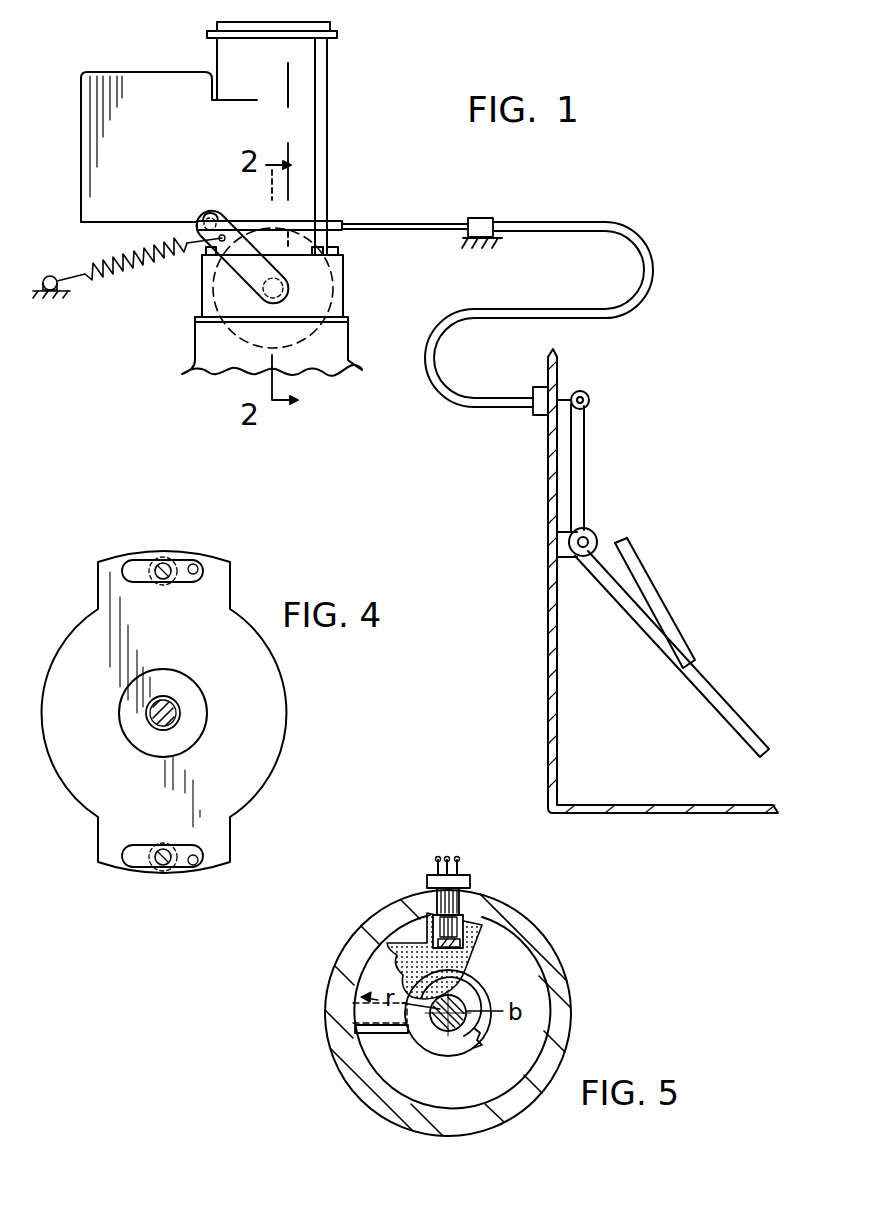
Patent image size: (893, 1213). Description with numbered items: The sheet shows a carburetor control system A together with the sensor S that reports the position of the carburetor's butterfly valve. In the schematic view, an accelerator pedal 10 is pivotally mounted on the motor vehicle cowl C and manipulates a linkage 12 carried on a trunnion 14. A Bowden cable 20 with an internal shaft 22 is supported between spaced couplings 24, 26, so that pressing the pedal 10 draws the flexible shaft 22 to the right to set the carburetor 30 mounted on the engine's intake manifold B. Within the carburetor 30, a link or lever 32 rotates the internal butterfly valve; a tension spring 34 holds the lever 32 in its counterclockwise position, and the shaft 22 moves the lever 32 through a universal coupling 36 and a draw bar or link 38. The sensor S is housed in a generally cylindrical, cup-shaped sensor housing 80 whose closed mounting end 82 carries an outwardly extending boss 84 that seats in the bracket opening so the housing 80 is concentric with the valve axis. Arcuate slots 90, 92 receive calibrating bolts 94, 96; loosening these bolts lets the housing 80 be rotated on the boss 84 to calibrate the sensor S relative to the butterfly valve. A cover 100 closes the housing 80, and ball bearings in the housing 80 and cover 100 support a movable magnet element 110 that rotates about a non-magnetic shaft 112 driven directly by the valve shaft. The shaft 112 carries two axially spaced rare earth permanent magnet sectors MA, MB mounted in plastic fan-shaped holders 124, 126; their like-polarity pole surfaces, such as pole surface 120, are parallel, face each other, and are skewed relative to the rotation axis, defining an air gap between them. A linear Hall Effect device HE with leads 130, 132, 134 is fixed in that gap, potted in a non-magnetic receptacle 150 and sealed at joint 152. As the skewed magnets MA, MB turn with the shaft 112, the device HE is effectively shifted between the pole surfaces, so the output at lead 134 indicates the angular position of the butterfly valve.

In FIG. 1, the accelerator pedal 10 is at (655, 583).
In FIG. 1, the linkage 12 is at (577, 473).
In FIG. 1, the trunnion 14 is at (590, 535).
In FIG. 1, the Bowden cable 20 is at (637, 240).
In FIG. 1, the internal shaft 22 is at (446, 223).
In FIG. 1, the coupling 24 is at (483, 218).
In FIG. 1, the coupling 26 is at (542, 392).
In FIG. 1, the carburetor 30 is at (323, 180).
In FIG. 1, the link or lever 32 is at (240, 278).
In FIG. 1, the tension spring 34 is at (126, 284).
In FIG. 1, the universal coupling 36 is at (213, 214).
In FIG. 1, the draw bar or link 38 is at (338, 221).
In FIG. 4, the sensor housing 80 is at (262, 762).
In FIG. 5, the sensor housing 80 is at (566, 967).
In FIG. 4, the closed mounting end 82 is at (238, 798).
In FIG. 4, the boss 84 is at (206, 718).
In FIG. 4, the arcuate slot 90 is at (200, 572).
In FIG. 4, the arcuate slot 92 is at (194, 866).
In FIG. 4, the calibrating bolt 94 is at (166, 567).
In FIG. 4, the calibrating bolt 96 is at (163, 850).
In FIG. 5, the cover 100 is at (520, 972).
In FIG. 5, the movable magnet element 110 is at (487, 1046).
In FIG. 4, the shaft 112 is at (166, 698).
In FIG. 5, the shaft 112 is at (466, 1000).
In FIG. 5, the magnetic pole surface 120 is at (365, 935).
In FIG. 5, the fan-shaped holder 124 is at (478, 1030).
In FIG. 5, the fan-shaped holder 126 is at (372, 1030).
In FIG. 5, the lead 130 is at (438, 856).
In FIG. 5, the lead 132 is at (447, 856).
In FIG. 5, the lead 134 is at (458, 857).
In FIG. 5, the non-magnetic receptacle 150 is at (456, 945).
In FIG. 5, the joint 152 is at (430, 886).
In FIG. 1, the system A is at (375, 403).
In FIG. 1, the intake manifold B is at (348, 336).
In FIG. 1, the motor vehicle cowl C is at (557, 702).
In FIG. 1, the sensor S is at (336, 291).
In FIG. 4, the sensor S is at (289, 696).
In FIG. 5, the sensor S is at (519, 907).
In FIG. 5, the permanent magnet sector MA is at (388, 940).
In FIG. 5, the permanent magnet sector MB is at (350, 1013).
In FIG. 5, the Hall Effect device HE is at (460, 940).